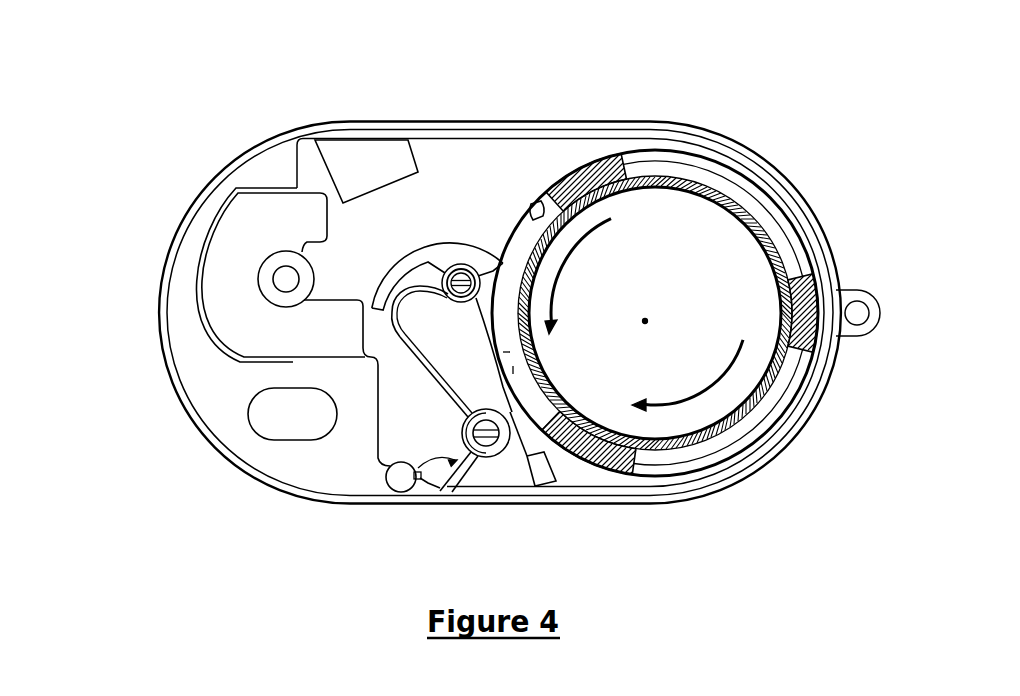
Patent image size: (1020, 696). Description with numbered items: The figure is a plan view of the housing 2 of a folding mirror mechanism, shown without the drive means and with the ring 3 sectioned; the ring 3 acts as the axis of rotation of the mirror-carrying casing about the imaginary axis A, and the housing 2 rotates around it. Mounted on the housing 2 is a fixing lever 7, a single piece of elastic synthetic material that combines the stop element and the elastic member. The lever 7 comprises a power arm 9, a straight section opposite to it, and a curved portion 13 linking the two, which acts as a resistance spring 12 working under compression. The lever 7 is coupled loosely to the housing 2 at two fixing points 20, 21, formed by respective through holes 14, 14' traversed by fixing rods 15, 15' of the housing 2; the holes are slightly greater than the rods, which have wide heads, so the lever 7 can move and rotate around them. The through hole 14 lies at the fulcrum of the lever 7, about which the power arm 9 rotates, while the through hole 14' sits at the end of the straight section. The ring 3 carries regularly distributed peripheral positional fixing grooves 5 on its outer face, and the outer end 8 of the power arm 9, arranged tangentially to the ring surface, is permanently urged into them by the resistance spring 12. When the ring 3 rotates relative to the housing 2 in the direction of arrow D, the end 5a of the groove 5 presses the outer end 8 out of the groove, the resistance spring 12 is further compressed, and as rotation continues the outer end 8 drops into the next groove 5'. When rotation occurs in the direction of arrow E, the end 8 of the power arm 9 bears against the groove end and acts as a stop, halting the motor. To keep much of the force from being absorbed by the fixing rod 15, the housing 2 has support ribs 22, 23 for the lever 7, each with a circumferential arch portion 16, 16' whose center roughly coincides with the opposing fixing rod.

The housing 2 is at (233, 156).
The ring 3 is at (730, 200).
The peripheral positional fixing groove 5 is at (695, 316).
The groove 5' is at (655, 277).
The end of the groove 5a is at (522, 200).
The fixing lever 7 is at (412, 370).
The outer end of the power arm 8 is at (510, 352).
The power arm 9 is at (513, 370).
The resistance spring 12 is at (442, 395).
The curved portion 13 is at (392, 326).
The through hole 14 is at (458, 160).
The through hole 14' is at (487, 485).
The fixing rod 15 is at (377, 152).
The fixing rod 15' is at (448, 518).
The circumferential arch portion 16 is at (485, 155).
The circumferential arch portion 16' is at (583, 486).
The fixing point 20 is at (464, 262).
The fixing point 21 is at (505, 453).
The support rib 22 is at (383, 266).
The support rib 23 is at (402, 491).
The imaginary axis A is at (666, 322).
The arrow D is at (578, 276).
The arrow E is at (687, 375).